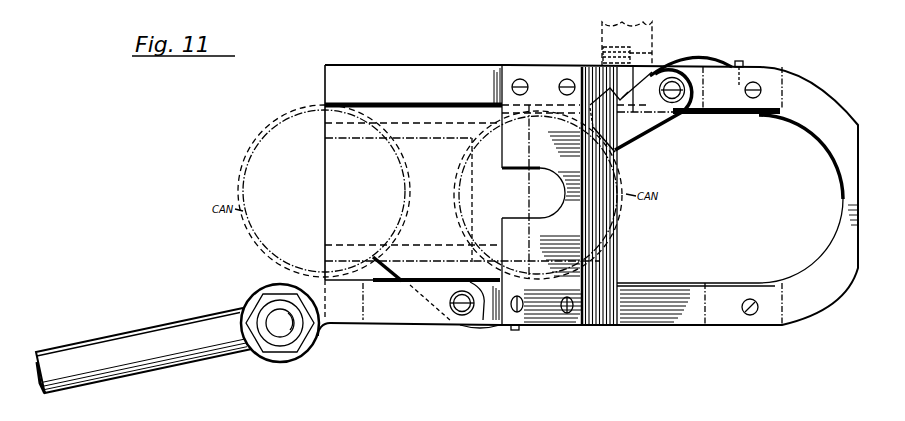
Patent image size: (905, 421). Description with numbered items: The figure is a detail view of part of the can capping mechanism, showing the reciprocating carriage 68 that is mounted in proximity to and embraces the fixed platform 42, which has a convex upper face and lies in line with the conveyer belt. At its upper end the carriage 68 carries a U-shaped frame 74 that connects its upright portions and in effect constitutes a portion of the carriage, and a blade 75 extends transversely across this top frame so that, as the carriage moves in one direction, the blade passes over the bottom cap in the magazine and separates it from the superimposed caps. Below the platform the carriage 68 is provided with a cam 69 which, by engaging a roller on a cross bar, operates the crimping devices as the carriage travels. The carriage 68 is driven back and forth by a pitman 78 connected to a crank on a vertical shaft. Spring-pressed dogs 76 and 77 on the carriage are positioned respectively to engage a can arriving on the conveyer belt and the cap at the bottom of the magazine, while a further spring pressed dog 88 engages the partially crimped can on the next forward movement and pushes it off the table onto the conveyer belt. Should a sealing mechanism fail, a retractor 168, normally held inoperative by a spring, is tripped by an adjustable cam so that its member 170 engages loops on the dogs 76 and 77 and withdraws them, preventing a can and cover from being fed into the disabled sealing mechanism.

The fixed platform 42 is at (410, 165).
The carriage 68 is at (742, 281).
The cam 69 is at (473, 184).
The U-shaped frame 74 is at (768, 68).
The blade 75 is at (541, 204).
The spring-pressed dog 76 is at (662, 122).
The spring-pressed dog 77 is at (635, 147).
The pitman 78 is at (163, 323).
The spring pressed dog 88 is at (470, 282).
The retractor 168 is at (627, 36).
The member 170 is at (603, 56).